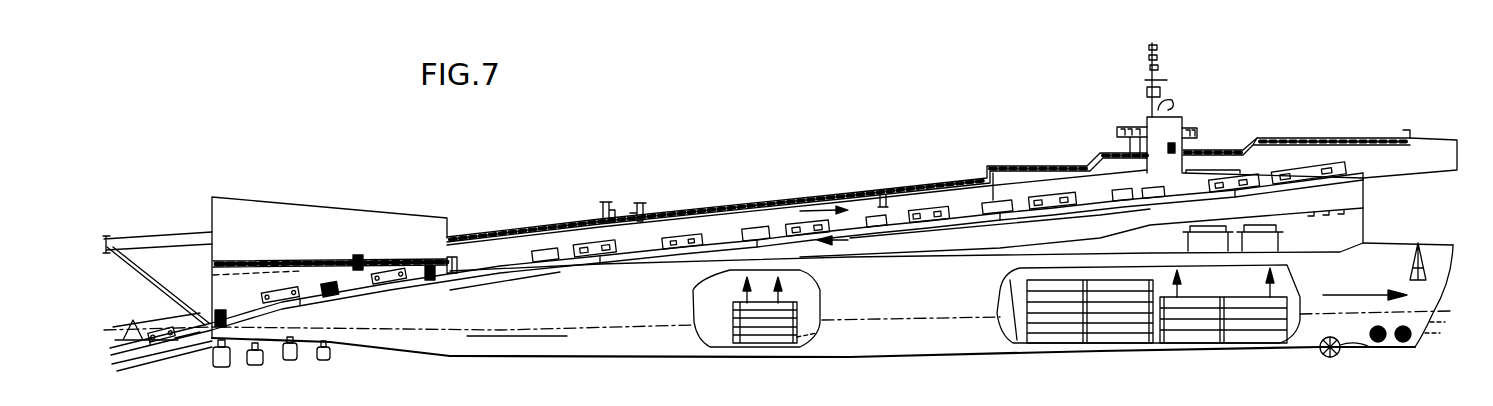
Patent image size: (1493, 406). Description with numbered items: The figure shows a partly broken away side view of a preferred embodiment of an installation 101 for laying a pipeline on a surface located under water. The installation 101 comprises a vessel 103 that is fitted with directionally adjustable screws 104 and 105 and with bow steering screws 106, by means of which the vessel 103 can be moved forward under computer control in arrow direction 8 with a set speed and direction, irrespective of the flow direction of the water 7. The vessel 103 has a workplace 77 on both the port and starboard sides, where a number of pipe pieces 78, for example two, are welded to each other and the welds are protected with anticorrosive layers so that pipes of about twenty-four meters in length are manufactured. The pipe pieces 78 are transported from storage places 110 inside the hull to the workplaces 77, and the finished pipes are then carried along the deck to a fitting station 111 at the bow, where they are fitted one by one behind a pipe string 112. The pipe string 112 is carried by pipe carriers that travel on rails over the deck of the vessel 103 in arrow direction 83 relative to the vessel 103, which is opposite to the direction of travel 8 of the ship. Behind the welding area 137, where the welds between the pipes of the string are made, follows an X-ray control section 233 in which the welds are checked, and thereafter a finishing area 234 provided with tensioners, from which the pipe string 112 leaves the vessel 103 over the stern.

The water 7 is at (1436, 300).
The arrow direction 8 is at (1357, 290).
The workplace 77 is at (806, 186).
The pipe pieces 78 is at (788, 317).
The arrow direction 83 is at (880, 224).
The installation 101 is at (540, 160).
The vessel 103 is at (1380, 250).
The directionally adjustable screw 104 is at (292, 386).
The directionally adjustable screw 105 is at (1320, 352).
The bow steering screws 106 is at (1376, 343).
The storage places 110 is at (705, 302).
The fitting station 111 is at (1358, 140).
The pipe string 112 is at (358, 256).
The welding area 137 is at (1177, 92).
The X-ray control section 233 is at (455, 258).
The finishing area 234 is at (412, 103).